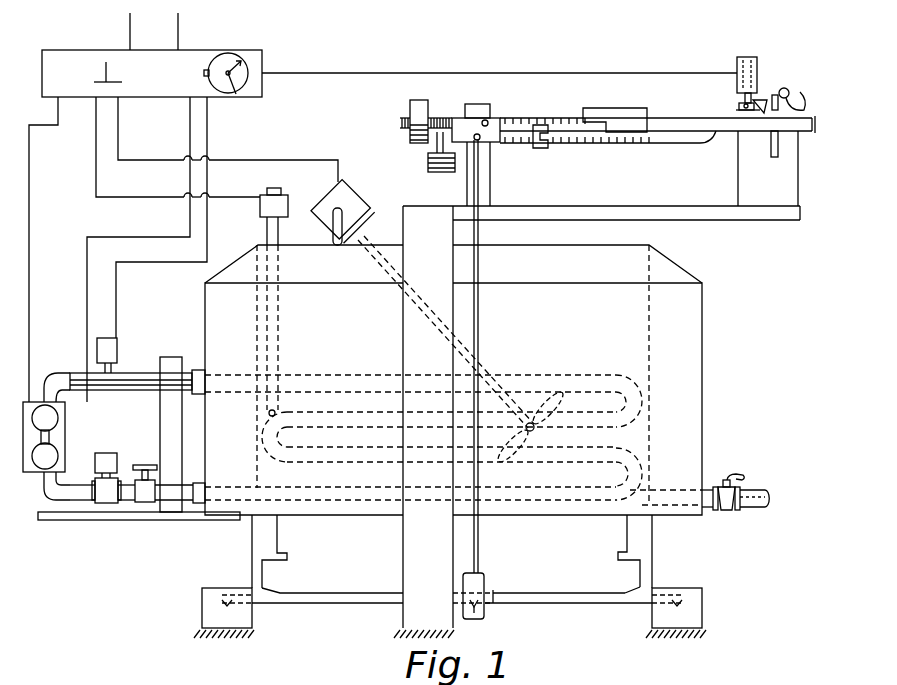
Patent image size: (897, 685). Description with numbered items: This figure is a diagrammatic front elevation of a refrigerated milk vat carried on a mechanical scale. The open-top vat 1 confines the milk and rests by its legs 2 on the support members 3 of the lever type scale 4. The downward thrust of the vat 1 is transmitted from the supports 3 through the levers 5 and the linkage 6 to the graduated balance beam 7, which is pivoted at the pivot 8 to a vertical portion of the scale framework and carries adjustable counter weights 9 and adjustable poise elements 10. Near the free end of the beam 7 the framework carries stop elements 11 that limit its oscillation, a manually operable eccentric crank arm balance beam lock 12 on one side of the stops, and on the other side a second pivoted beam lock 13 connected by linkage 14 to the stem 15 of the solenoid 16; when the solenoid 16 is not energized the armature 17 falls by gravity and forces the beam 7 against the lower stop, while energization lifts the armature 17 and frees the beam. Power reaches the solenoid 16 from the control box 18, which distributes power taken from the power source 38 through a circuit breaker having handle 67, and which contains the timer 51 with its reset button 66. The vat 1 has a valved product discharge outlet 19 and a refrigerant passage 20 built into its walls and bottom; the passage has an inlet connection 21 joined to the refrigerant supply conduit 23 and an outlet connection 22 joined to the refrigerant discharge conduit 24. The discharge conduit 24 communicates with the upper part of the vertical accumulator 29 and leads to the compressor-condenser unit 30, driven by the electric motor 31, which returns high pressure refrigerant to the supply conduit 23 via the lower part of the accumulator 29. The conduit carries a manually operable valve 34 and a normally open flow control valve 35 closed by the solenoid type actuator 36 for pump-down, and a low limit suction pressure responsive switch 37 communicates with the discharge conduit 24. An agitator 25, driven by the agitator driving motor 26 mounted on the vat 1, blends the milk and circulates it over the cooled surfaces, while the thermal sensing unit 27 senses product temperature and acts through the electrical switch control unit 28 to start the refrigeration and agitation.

The vat 1 is at (690, 368).
The legs 2 is at (655, 537).
The support members 3 is at (655, 568).
The scale 4 is at (420, 538).
The levers 5 is at (330, 606).
The linkage 6 is at (479, 312).
The balance beam 7 is at (553, 117).
The pivot 8 is at (488, 120).
The adjustable counter weights 9 is at (416, 146).
The adjustable poise elements 10 is at (549, 146).
The stop elements 11 is at (775, 95).
The balance beam lock 12 is at (804, 98).
The beam lock 13 is at (759, 113).
The linkage 14 is at (736, 110).
The stem 15 is at (739, 104).
The solenoid 16 is at (737, 62).
The armature 17 is at (760, 72).
The control box 18 is at (173, 71).
The valved product discharge outlet 19 is at (727, 512).
The passage 20 is at (603, 375).
The inlet connection 21 is at (206, 485).
The outlet connection 22 is at (196, 370).
The refrigerant supply conduit 23 is at (161, 502).
The refrigerant discharge conduit 24 is at (143, 372).
The agitator 25 is at (532, 436).
The agitator driving motor 26 is at (356, 209).
The thermal sensing unit 27 is at (280, 352).
The electrical switch control unit 28 is at (262, 201).
The accumulator 29 is at (163, 445).
The compressor-condenser unit 30 is at (31, 475).
The electric motor 31 is at (57, 372).
The manually operable valve 34 is at (143, 503).
The refrigerant flow control valve 35 is at (105, 503).
The solenoid type actuator 36 is at (107, 452).
The low limit suction pressure responsive switch 37 is at (116, 345).
The power source 38 is at (178, 30).
The timer 51 is at (234, 92).
The reset button 66 is at (206, 73).
The handle 67 is at (104, 71).